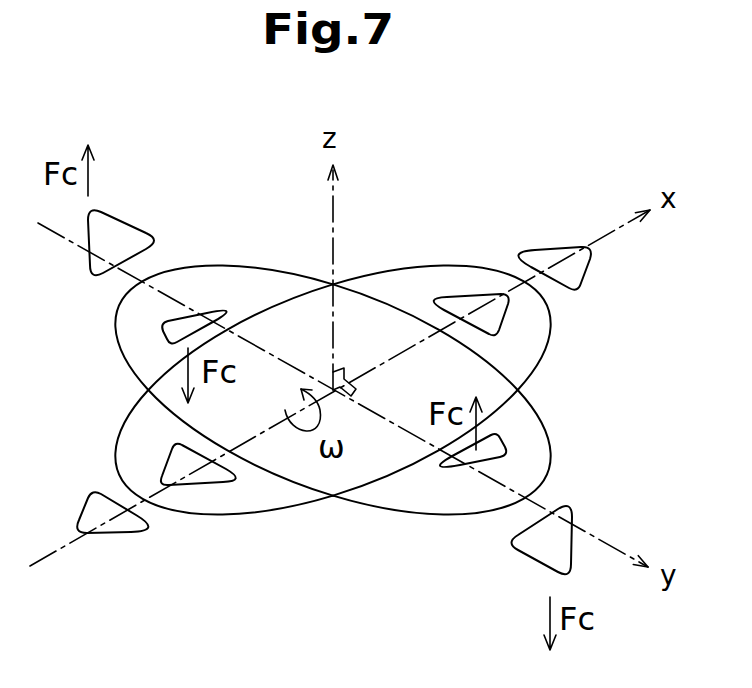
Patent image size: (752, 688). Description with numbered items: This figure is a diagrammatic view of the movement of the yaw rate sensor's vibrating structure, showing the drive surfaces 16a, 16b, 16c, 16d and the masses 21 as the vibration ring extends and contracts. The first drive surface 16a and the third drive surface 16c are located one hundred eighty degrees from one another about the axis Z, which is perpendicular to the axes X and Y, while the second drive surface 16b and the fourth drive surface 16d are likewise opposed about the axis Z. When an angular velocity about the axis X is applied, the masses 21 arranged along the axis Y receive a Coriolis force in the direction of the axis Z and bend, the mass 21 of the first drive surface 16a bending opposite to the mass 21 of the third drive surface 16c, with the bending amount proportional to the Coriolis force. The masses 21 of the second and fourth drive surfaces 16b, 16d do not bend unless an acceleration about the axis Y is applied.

The mass 21 is at (118, 222).
The first drive surface 16a is at (177, 268).
The second drive surface 16b is at (543, 288).
The third drive surface 16c is at (552, 450).
The fourth drive surface 16d is at (270, 480).